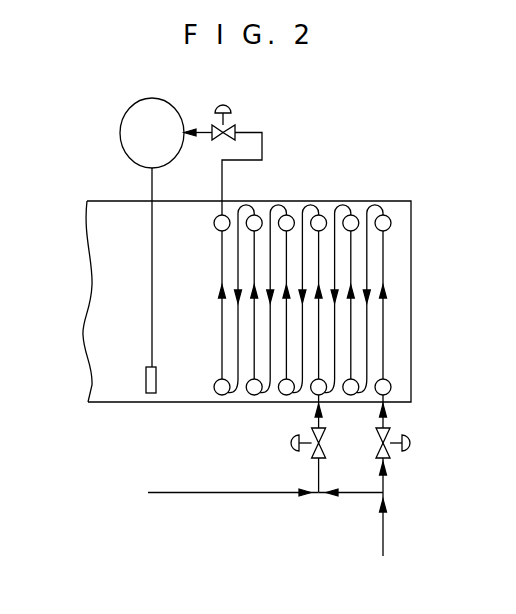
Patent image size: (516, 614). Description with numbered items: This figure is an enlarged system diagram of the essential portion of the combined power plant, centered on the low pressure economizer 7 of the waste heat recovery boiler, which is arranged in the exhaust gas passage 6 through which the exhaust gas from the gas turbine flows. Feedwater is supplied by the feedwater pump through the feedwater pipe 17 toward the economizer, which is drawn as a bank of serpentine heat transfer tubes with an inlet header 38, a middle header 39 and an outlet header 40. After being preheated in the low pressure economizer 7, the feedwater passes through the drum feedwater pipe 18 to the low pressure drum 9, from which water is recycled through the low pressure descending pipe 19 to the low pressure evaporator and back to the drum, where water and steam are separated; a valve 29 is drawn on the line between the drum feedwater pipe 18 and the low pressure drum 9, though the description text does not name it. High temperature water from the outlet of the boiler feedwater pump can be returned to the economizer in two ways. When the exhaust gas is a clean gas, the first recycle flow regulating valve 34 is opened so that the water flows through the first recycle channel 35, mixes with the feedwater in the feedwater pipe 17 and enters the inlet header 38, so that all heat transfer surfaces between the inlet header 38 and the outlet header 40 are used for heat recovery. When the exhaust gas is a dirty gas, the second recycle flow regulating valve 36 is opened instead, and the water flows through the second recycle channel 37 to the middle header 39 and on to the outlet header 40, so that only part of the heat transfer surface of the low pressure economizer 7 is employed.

The exhaust gas passage 6 is at (406, 200).
The low pressure economizer 7 is at (218, 294).
The low pressure drum 9 is at (122, 118).
The feedwater pipe 17 is at (386, 531).
The drum feedwater pipe 18 is at (264, 147).
The low pressure descending pipe 19 is at (153, 342).
The control valve 29 is at (228, 103).
The first recycle flow regulating valve 34 is at (396, 432).
The first recycle channel 35 is at (355, 493).
The second recycle flow regulating valve 36 is at (289, 443).
The second recycle channel 37 is at (316, 476).
The inlet header 38 is at (389, 384).
The middle header 39 is at (325, 393).
The outlet header 40 is at (226, 213).